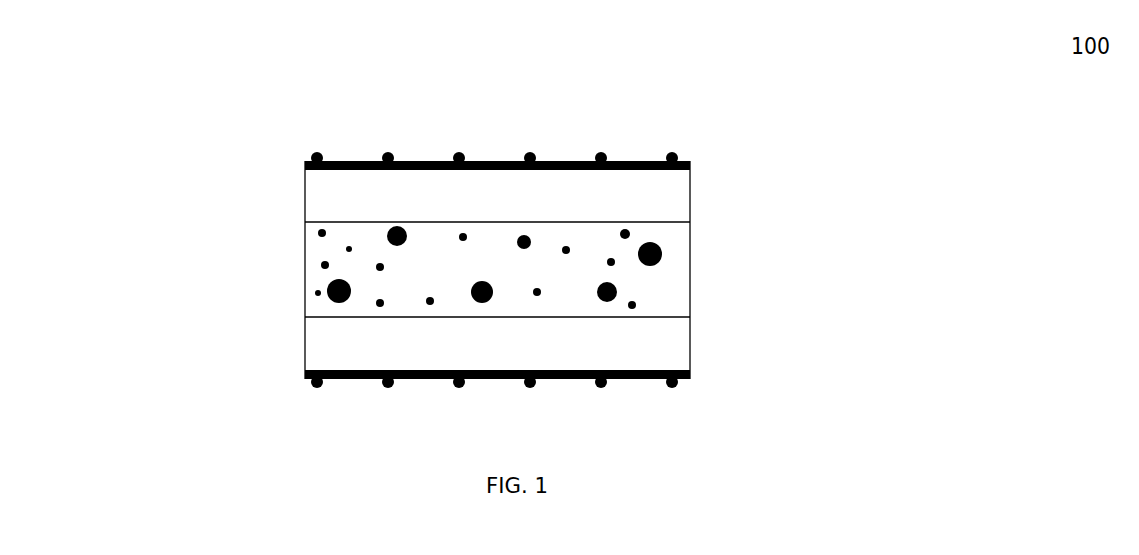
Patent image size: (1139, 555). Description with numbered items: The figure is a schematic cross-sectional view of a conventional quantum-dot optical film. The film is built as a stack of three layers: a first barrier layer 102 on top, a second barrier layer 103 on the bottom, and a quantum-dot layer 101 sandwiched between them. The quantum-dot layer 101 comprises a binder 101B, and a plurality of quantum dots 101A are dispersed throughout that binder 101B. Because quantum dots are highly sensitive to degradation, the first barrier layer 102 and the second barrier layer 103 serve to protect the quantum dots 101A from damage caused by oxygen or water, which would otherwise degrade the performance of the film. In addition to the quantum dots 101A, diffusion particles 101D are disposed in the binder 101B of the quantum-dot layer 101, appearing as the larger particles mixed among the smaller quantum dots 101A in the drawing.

The quantum-dot layer 101 is at (497, 270).
The quantum dots 101A is at (308, 225).
The binder 101B is at (307, 260).
The diffusion particles 101D is at (307, 295).
The first barrier layer 102 is at (497, 187).
The second barrier layer 103 is at (497, 352).